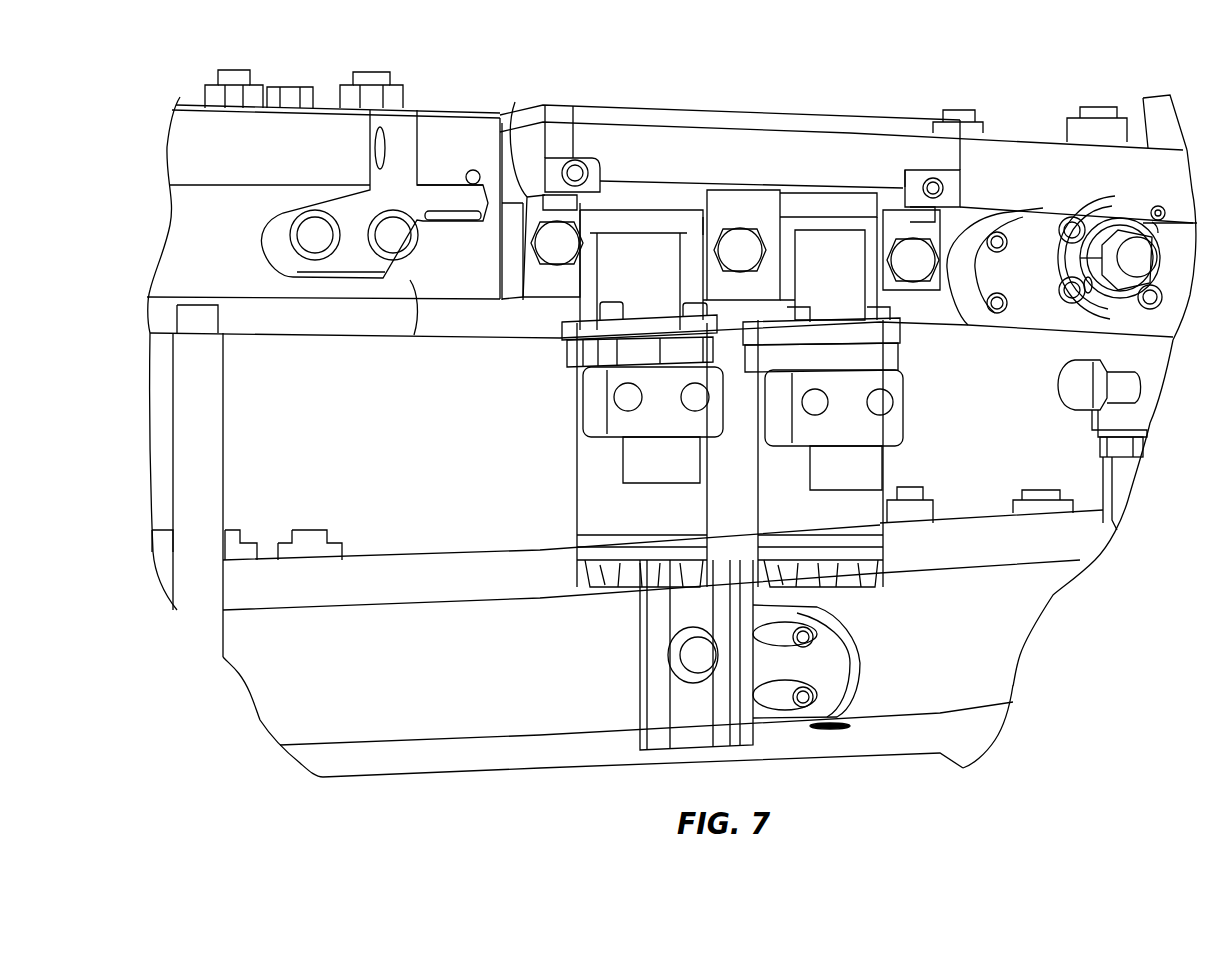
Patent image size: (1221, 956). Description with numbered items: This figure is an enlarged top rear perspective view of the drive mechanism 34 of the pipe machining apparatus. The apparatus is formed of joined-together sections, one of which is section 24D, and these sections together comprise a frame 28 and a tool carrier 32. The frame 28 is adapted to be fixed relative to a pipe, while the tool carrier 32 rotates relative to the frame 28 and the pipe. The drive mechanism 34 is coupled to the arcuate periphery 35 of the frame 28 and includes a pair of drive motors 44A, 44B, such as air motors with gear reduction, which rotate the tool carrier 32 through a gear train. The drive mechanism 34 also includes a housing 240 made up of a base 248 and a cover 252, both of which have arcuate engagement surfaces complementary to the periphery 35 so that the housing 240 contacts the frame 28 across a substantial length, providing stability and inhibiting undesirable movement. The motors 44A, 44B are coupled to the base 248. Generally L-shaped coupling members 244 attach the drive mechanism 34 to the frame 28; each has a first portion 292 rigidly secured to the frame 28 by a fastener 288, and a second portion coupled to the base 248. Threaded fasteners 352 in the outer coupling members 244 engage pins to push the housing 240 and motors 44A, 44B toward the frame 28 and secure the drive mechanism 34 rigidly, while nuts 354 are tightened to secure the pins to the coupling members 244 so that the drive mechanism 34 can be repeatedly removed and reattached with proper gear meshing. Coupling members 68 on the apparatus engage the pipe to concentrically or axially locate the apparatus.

The section 24D is at (428, 94).
The frame 28 is at (333, 316).
The tool carrier 32 is at (1050, 137).
The drive mechanism 34 is at (560, 466).
The periphery 35 is at (414, 335).
The drive motor 44A is at (882, 535).
The drive motor 44B is at (577, 563).
The coupling member 68 is at (1044, 339).
The housing 240 is at (797, 108).
The coupling member 244 is at (486, 216).
The base 248 is at (571, 138).
The cover 252 is at (641, 112).
The fastener 288 is at (748, 245).
The first portion 292 is at (510, 280).
The threaded fastener 352 is at (582, 172).
The nut 354 is at (535, 187).